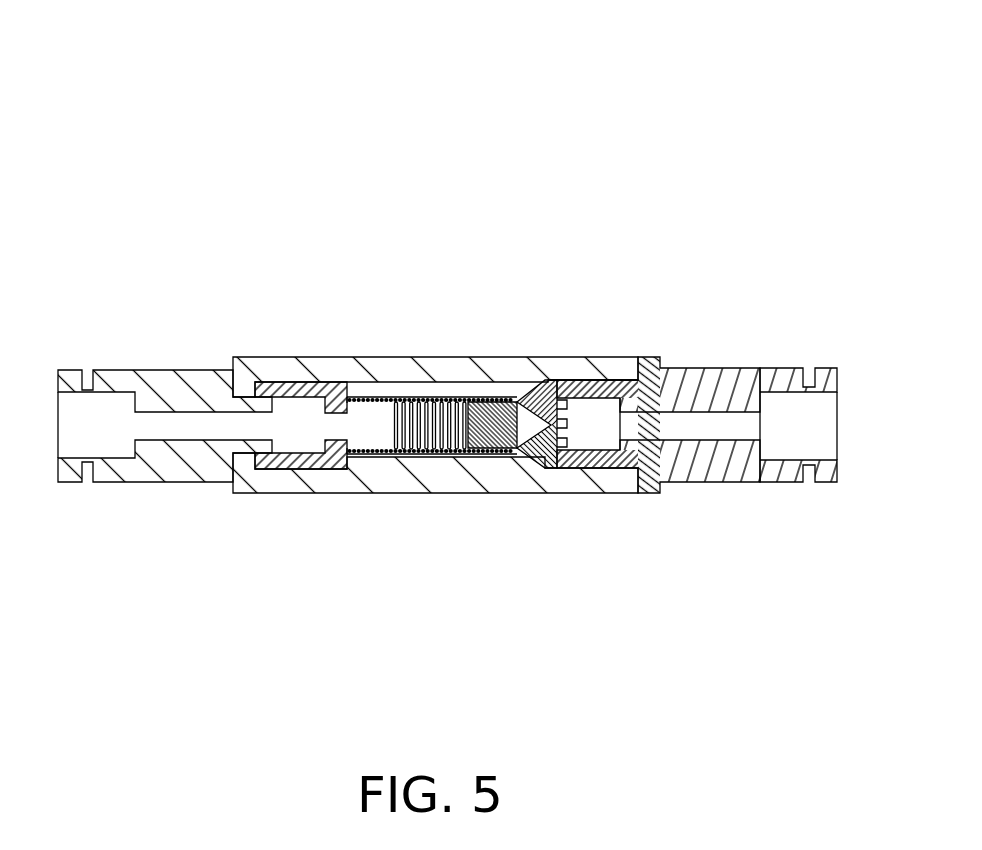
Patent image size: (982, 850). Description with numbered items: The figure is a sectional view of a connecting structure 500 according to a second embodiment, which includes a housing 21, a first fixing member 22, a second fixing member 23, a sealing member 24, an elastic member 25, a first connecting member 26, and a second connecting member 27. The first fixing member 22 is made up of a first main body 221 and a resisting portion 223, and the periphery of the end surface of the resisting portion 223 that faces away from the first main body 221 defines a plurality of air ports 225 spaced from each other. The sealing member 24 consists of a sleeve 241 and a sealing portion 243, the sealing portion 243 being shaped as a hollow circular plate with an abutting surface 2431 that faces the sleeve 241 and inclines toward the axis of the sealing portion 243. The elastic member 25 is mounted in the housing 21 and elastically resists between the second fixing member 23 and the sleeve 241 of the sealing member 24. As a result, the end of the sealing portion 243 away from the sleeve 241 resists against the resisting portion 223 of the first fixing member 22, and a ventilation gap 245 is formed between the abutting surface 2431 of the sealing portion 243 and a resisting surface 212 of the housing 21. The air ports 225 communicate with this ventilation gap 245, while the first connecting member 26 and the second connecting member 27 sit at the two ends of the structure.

The connecting structure 500 is at (436, 84).
The housing 21 is at (580, 363).
The resisting surface 212 is at (542, 388).
The first fixing member 22 is at (671, 413).
The first main body 221 is at (647, 363).
The resisting portion 223 is at (622, 380).
The air ports 225 is at (567, 455).
The second fixing member 23 is at (312, 387).
The sealing member 24 is at (505, 434).
The sleeve 241 is at (485, 452).
The sealing portion 243 is at (530, 457).
The abutting surface 2431 is at (548, 388).
The ventilation gap 245 is at (545, 470).
The elastic member 25 is at (413, 398).
The first connecting member 26 is at (780, 383).
The second connecting member 27 is at (160, 378).